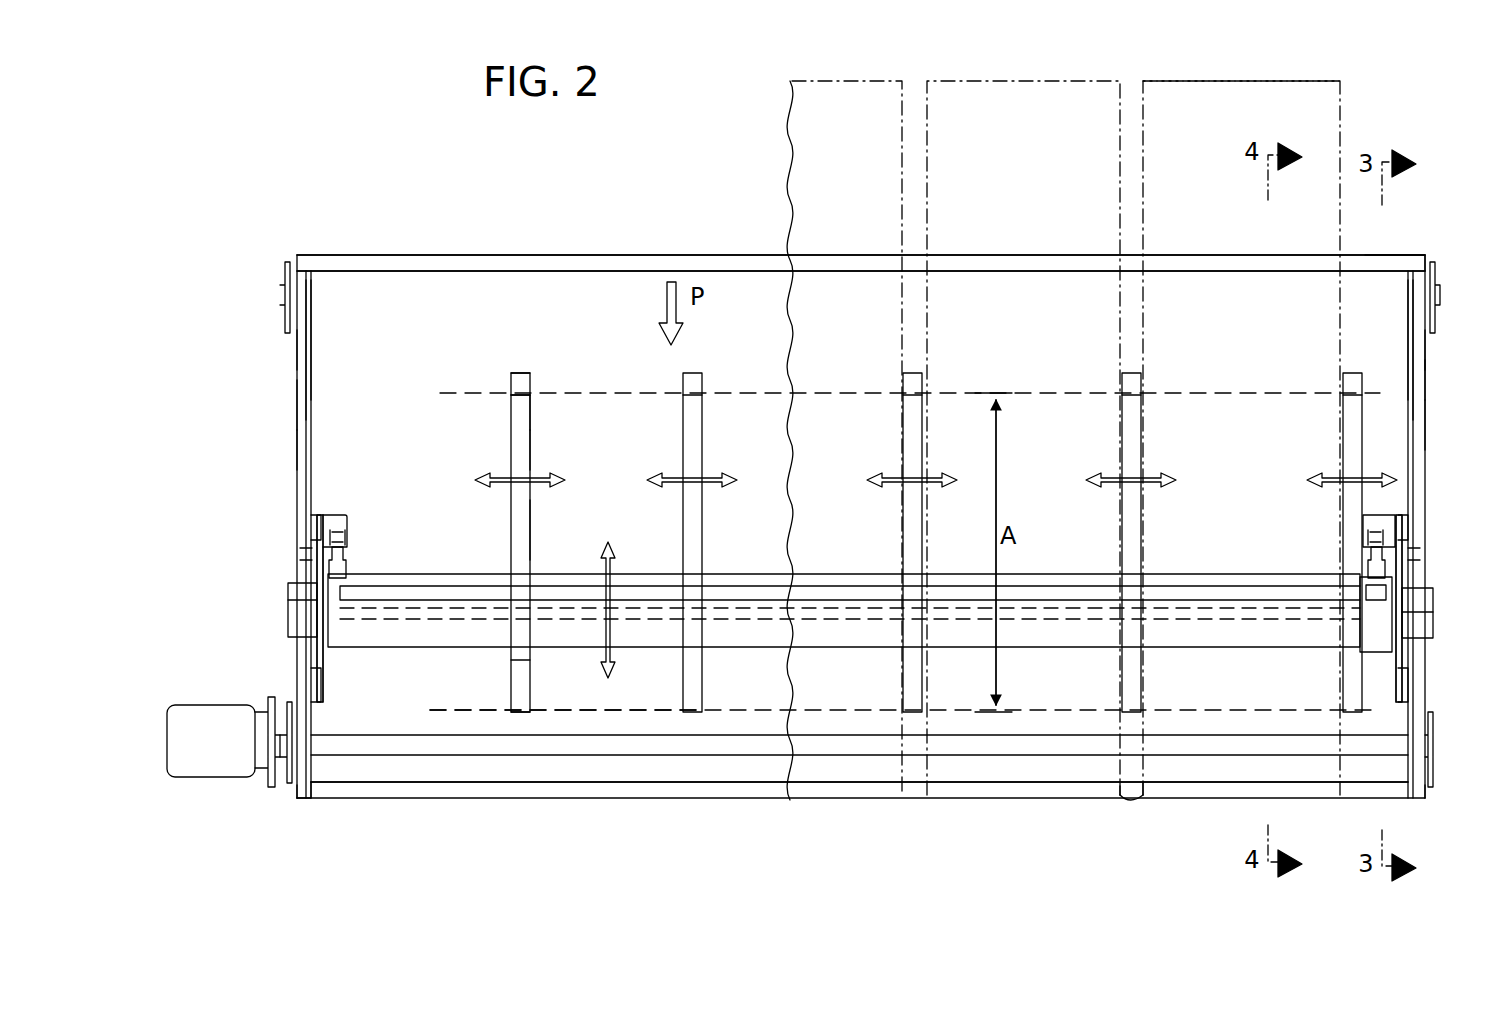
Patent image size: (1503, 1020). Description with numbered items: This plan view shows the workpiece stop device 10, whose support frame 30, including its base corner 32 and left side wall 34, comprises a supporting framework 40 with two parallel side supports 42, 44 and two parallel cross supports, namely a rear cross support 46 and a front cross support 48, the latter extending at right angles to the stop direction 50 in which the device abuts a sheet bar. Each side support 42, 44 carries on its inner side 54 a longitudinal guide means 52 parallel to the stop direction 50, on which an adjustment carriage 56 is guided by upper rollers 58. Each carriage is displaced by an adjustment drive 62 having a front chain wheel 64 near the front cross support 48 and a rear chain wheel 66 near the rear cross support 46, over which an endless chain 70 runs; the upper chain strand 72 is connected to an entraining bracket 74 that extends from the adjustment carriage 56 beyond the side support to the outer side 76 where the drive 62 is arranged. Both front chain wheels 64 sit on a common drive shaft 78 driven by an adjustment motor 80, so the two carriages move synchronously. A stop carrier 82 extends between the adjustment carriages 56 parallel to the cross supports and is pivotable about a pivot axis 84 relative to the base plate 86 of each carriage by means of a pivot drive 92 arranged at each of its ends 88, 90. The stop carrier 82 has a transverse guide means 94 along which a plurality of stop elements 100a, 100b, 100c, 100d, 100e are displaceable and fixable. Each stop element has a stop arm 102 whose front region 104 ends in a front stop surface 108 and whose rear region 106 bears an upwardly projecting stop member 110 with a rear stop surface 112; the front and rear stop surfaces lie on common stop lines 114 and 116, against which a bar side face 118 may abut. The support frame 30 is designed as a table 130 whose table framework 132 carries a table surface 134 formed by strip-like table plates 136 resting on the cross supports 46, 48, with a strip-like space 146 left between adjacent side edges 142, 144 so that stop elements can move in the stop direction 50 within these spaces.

The stop device 10 is at (390, 228).
The support frame 30 is at (330, 805).
The base corner 32 is at (302, 798).
The left side wall 34 is at (297, 254).
The supporting framework 40 is at (450, 254).
The side support 42 is at (300, 405).
The side support 44 is at (1415, 430).
The rear cross support 46 is at (1020, 262).
The front cross support 48 is at (990, 790).
The stop direction 50 is at (625, 590).
The longitudinal guide means 52 is at (318, 335).
The inner side 54 is at (311, 390).
The adjustment carriage 56 is at (304, 556).
The upper rollers 58 is at (312, 528).
The adjustment drive 62 is at (288, 801).
The front chain wheel 64 is at (275, 785).
The rear chain wheel 66 is at (285, 275).
The endless chain 70 is at (290, 350).
The upper chain strand 72 is at (288, 600).
The entraining bracket 74 is at (300, 622).
The outer side 76 is at (295, 447).
The drive shaft 78 is at (806, 745).
The adjustment motor 80 is at (180, 712).
The stop carrier 82 is at (485, 580).
The pivot axis 84 is at (745, 610).
The base plate 86 is at (330, 690).
The end of stop carrier 88 is at (345, 578).
The end of stop carrier 90 is at (1370, 580).
The pivot drive 92 is at (355, 535).
The transverse guide means 94 is at (575, 595).
The stop element 100a is at (500, 420).
The stop element 100b is at (705, 420).
The stop element 100c is at (925, 425).
The stop element 100d is at (1145, 425).
The stop element 100e is at (1335, 425).
The stop arm 102 is at (530, 525).
The front region 104 is at (515, 683).
The rear region 106 is at (530, 410).
The front stop surface 108 is at (520, 712).
The stop member 110 is at (520, 373).
The rear stop surface 112 is at (530, 393).
The stop line 114 is at (620, 712).
The stop line 116 is at (838, 397).
The bar side face 118 is at (528, 447).
The table 130 is at (1406, 250).
The table framework 132 is at (1365, 255).
The table surface 134 is at (1230, 262).
The table plates 136 is at (860, 97).
The side edge 142 is at (1140, 795).
The side edge 144 is at (1118, 795).
The strip-like space 146 is at (1128, 800).